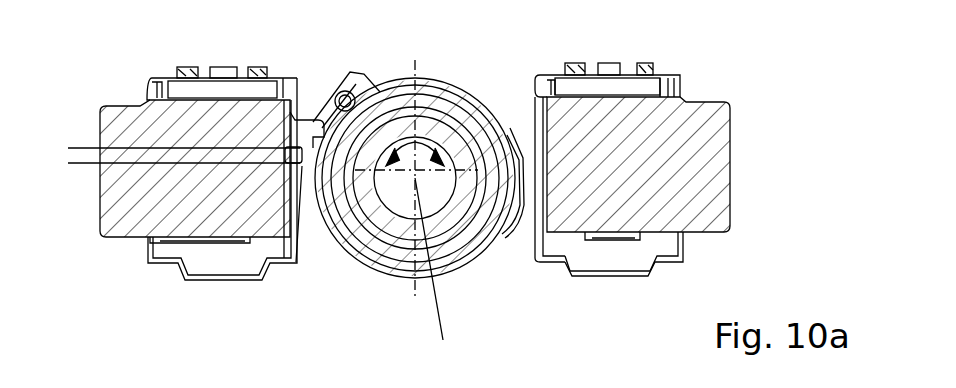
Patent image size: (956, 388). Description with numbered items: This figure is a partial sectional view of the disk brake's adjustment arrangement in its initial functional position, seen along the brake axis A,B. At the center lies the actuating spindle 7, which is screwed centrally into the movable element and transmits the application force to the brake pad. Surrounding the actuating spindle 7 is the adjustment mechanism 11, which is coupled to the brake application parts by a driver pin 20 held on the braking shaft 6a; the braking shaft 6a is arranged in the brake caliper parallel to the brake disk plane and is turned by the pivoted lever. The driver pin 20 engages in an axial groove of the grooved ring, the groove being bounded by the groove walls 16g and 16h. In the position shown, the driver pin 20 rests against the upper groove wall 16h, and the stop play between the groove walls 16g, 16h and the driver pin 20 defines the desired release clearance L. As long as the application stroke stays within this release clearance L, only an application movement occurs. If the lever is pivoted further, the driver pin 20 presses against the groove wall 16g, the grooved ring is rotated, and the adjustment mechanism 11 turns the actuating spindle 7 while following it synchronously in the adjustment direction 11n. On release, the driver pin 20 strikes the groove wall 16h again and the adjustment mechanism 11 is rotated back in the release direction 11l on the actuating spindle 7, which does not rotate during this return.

The braking shaft 6a is at (126, 107).
The groove wall 16g is at (297, 168).
The groove wall 16h is at (312, 118).
The driver pin 20 is at (300, 118).
The adjustment mechanism 11 is at (427, 60).
The actuating spindle 7 is at (452, 217).
The adjustment direction 11n is at (393, 150).
The release direction 11l is at (437, 150).
The release clearance L is at (68, 156).
The brake axis A,B is at (450, 264).